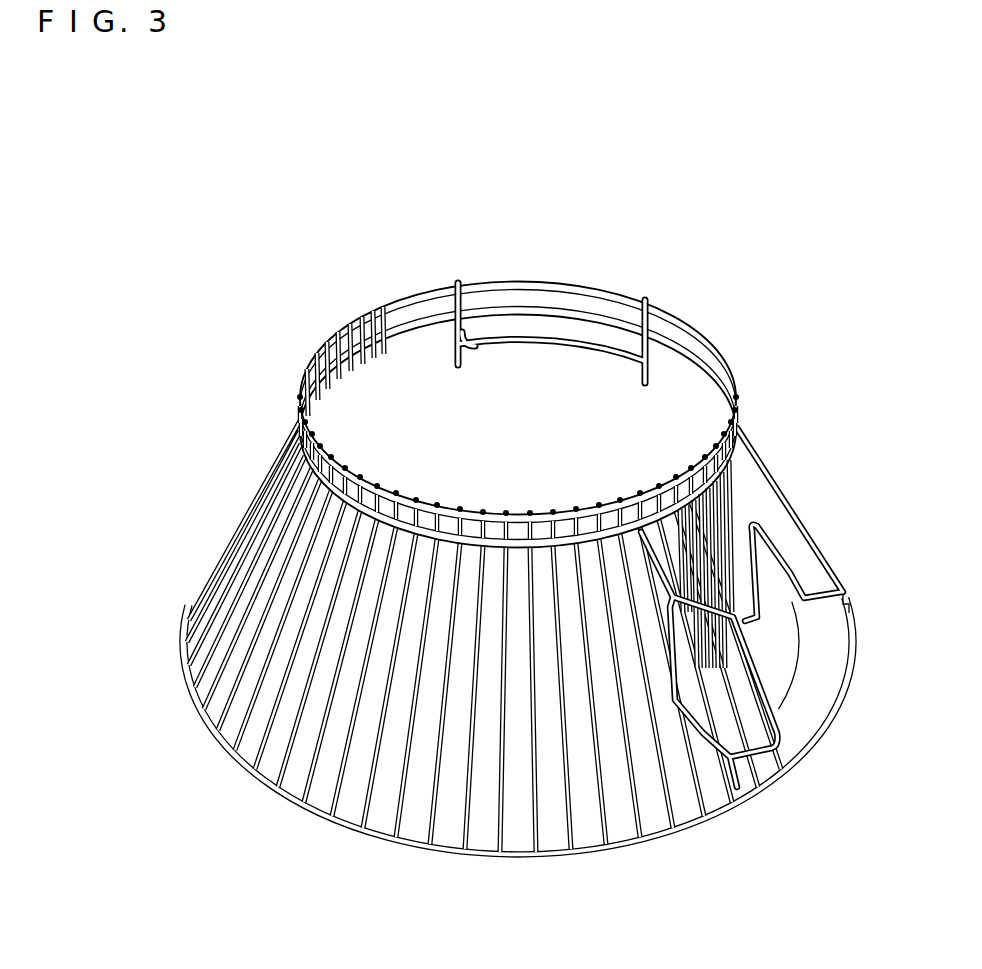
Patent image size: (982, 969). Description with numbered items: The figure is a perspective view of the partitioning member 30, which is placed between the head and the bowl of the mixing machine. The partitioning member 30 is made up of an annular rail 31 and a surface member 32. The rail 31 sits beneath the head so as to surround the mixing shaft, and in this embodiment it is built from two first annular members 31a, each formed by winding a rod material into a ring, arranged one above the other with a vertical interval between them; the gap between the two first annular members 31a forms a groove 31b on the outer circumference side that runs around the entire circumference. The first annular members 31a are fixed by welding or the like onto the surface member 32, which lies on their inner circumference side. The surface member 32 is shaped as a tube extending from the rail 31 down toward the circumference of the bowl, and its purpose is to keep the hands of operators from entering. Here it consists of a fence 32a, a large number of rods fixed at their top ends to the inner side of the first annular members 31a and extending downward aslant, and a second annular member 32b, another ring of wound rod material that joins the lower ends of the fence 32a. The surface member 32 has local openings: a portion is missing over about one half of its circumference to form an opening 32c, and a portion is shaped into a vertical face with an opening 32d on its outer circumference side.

The partitioning member 30 is at (244, 236).
The annular rail 31 is at (612, 405).
The first annular member 31a is at (513, 525).
The groove 31b is at (557, 533).
The surface member 32 is at (248, 507).
The fence 32a is at (507, 763).
The second annular member 32b is at (673, 833).
The opening 32c is at (387, 383).
The opening 32d is at (700, 687).